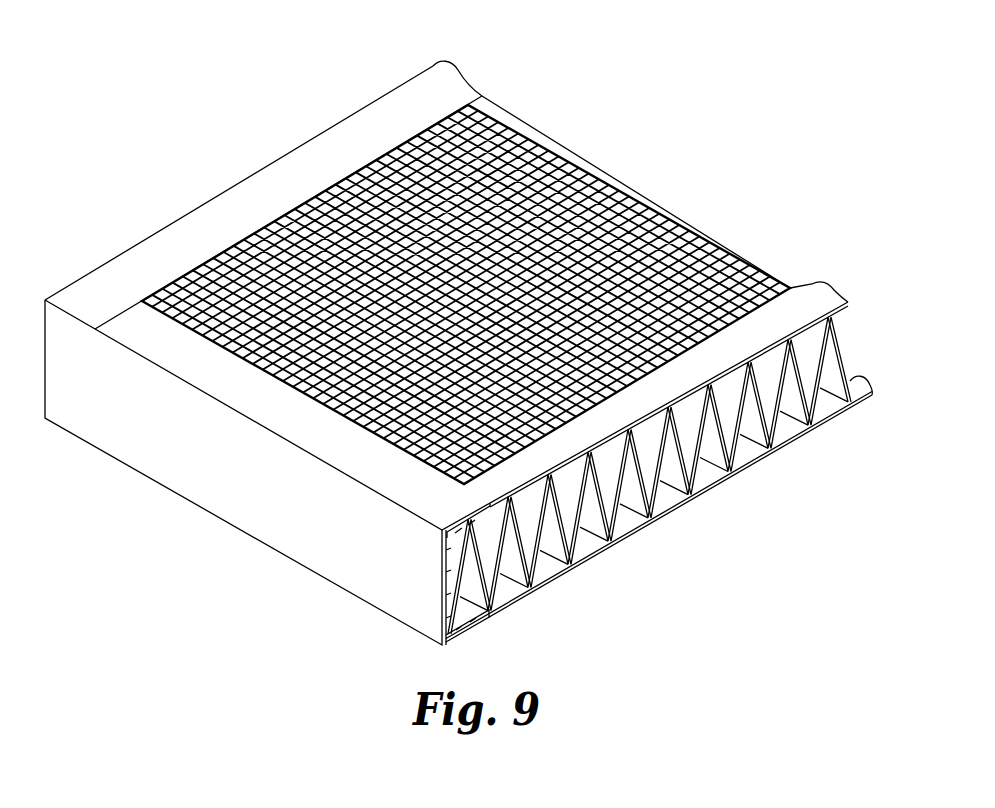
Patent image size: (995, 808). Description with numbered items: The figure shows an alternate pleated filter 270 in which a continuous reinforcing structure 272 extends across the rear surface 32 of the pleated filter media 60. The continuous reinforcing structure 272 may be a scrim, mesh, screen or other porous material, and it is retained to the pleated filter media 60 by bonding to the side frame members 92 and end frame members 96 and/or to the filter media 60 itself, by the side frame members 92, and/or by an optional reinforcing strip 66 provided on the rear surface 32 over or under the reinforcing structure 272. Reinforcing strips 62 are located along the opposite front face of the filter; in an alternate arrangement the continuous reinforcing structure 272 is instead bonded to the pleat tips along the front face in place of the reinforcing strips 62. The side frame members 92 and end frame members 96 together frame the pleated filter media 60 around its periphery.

The alternate pleated filter 270 is at (543, 66).
The rear surface 32 is at (338, 134).
The side frame members 92 is at (158, 247).
The continuous reinforcing structure 272 is at (618, 208).
The reinforcing strip 66 is at (810, 290).
The pleated filter media 60 is at (838, 345).
The reinforcing strips 62 is at (785, 423).
The end frame members 96 is at (120, 436).